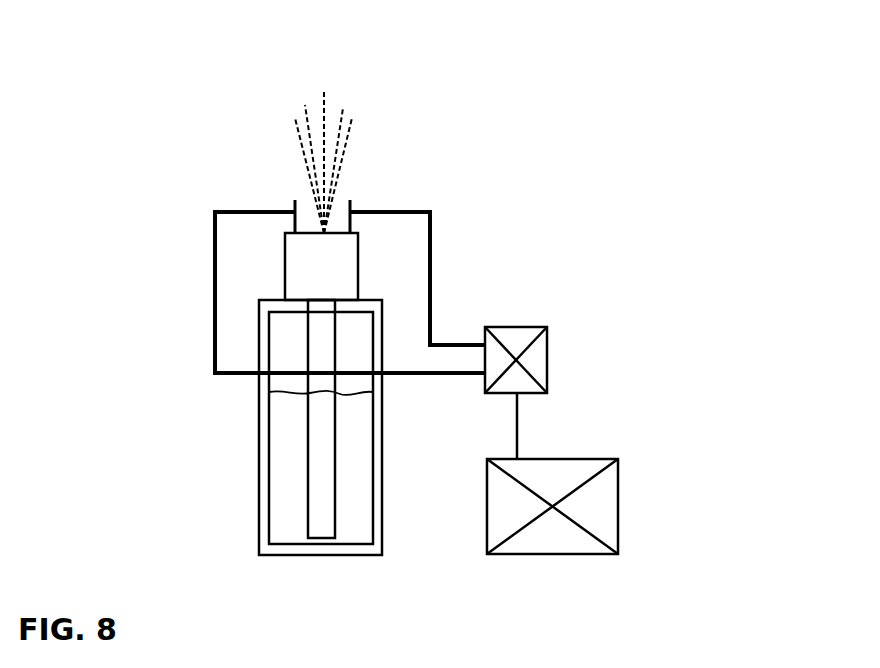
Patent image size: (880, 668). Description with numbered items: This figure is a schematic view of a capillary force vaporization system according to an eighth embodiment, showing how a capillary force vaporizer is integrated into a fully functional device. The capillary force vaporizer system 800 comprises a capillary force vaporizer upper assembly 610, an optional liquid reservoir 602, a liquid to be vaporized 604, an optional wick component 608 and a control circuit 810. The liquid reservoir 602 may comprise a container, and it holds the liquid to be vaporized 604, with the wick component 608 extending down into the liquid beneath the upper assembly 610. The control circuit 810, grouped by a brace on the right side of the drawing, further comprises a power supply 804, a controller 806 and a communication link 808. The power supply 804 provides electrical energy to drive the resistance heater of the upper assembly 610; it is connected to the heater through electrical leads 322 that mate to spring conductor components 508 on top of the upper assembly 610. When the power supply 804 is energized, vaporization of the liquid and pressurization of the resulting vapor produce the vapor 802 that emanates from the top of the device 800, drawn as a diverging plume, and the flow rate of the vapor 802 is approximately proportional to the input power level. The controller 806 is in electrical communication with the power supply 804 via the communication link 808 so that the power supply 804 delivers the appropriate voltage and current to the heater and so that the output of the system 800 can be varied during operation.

The capillary force vaporizer system 800 is at (140, 68).
The vapor 802 is at (344, 153).
The spring conductor components 508 is at (343, 213).
The electrical leads 322 is at (392, 368).
The capillary force vaporizer upper assembly 610 is at (177, 203).
The wick component 608 is at (317, 421).
The liquid to be vaporized 604 is at (286, 471).
The liquid reservoir 602 is at (264, 525).
The controller 806 is at (533, 356).
The communication link 808 is at (521, 429).
The power supply 804 is at (588, 504).
The control circuit 810 is at (693, 285).